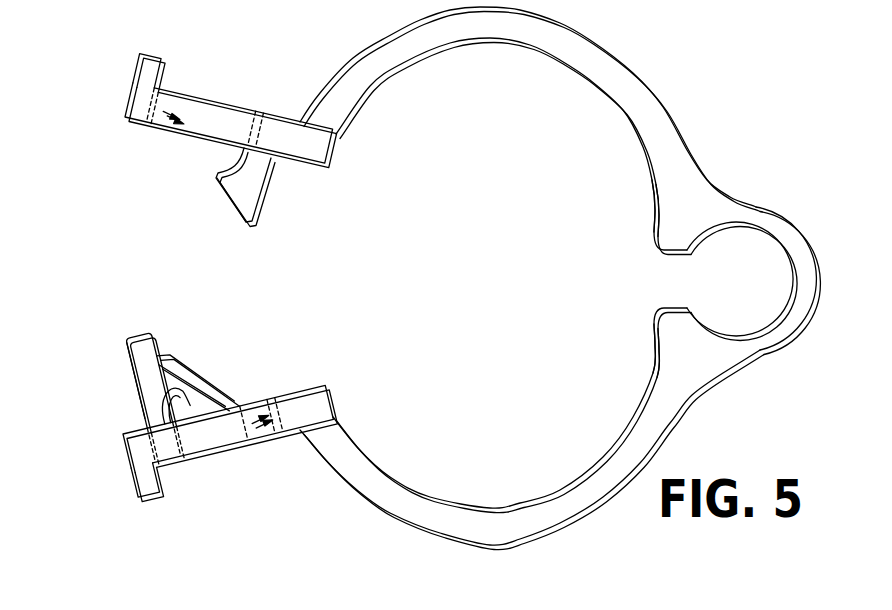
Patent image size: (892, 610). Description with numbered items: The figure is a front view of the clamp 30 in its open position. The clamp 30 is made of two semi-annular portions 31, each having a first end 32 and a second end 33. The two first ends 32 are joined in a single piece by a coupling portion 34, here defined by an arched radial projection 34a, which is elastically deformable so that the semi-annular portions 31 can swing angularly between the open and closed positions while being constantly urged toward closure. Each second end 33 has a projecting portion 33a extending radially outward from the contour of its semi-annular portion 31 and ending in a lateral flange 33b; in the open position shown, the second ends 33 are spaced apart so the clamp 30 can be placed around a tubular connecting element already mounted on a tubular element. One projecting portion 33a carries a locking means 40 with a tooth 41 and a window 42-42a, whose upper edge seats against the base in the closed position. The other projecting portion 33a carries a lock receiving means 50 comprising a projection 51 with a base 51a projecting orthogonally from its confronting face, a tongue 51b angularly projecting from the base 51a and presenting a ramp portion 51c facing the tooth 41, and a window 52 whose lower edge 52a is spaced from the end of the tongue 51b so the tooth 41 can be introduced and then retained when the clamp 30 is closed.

The clamp 30 is at (437, 297).
The semi-annular portion 31 is at (488, 39).
The first end 32 is at (649, 209).
The second end 33 is at (186, 305).
The projecting portion 33a is at (198, 95).
The lateral flange 33b is at (157, 46).
The coupling portion 34 is at (777, 351).
The arched radial projection 34a is at (802, 277).
The locking means 40 is at (226, 199).
The tooth 41 is at (249, 189).
The window and upper edge 42-42a is at (191, 122).
The lock receiving means 50 is at (175, 335).
The projection 51 is at (124, 341).
The base 51a is at (125, 376).
The tongue 51b is at (206, 396).
The ramp portion 51c is at (208, 371).
The window 52 is at (233, 430).
The lower edge 52a is at (245, 425).